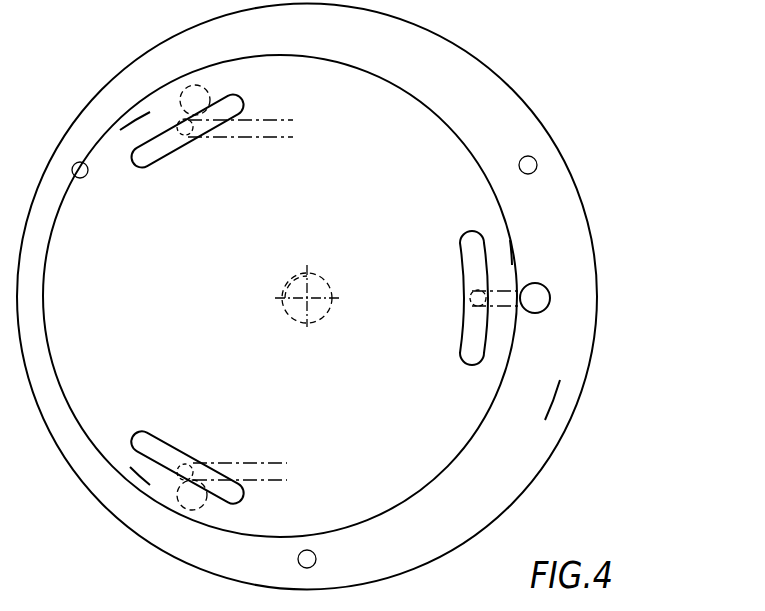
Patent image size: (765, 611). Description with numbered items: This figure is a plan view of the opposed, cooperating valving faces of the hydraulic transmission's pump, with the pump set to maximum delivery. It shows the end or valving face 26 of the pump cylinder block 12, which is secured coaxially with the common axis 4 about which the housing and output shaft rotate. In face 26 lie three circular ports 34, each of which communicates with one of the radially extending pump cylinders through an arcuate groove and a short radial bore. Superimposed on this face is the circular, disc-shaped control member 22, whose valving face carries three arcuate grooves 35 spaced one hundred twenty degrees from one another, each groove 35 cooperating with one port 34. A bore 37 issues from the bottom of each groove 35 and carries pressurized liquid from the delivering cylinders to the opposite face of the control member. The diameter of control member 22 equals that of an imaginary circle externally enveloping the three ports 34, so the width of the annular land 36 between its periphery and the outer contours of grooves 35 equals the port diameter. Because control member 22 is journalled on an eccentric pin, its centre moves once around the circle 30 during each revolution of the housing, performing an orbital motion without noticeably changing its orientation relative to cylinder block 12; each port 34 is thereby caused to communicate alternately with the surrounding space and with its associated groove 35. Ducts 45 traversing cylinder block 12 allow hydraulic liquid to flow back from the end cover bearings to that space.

The common axis 4 is at (317, 278).
The cylinder block 12 is at (540, 122).
The control member 22 is at (420, 473).
The end face of the cylinder block 26 is at (553, 400).
The circle 30 is at (320, 320).
The port 34 is at (208, 85).
The arcuate groove 35 is at (153, 163).
The land 36 is at (133, 122).
The bore 37 is at (190, 135).
The duct 45 is at (537, 165).